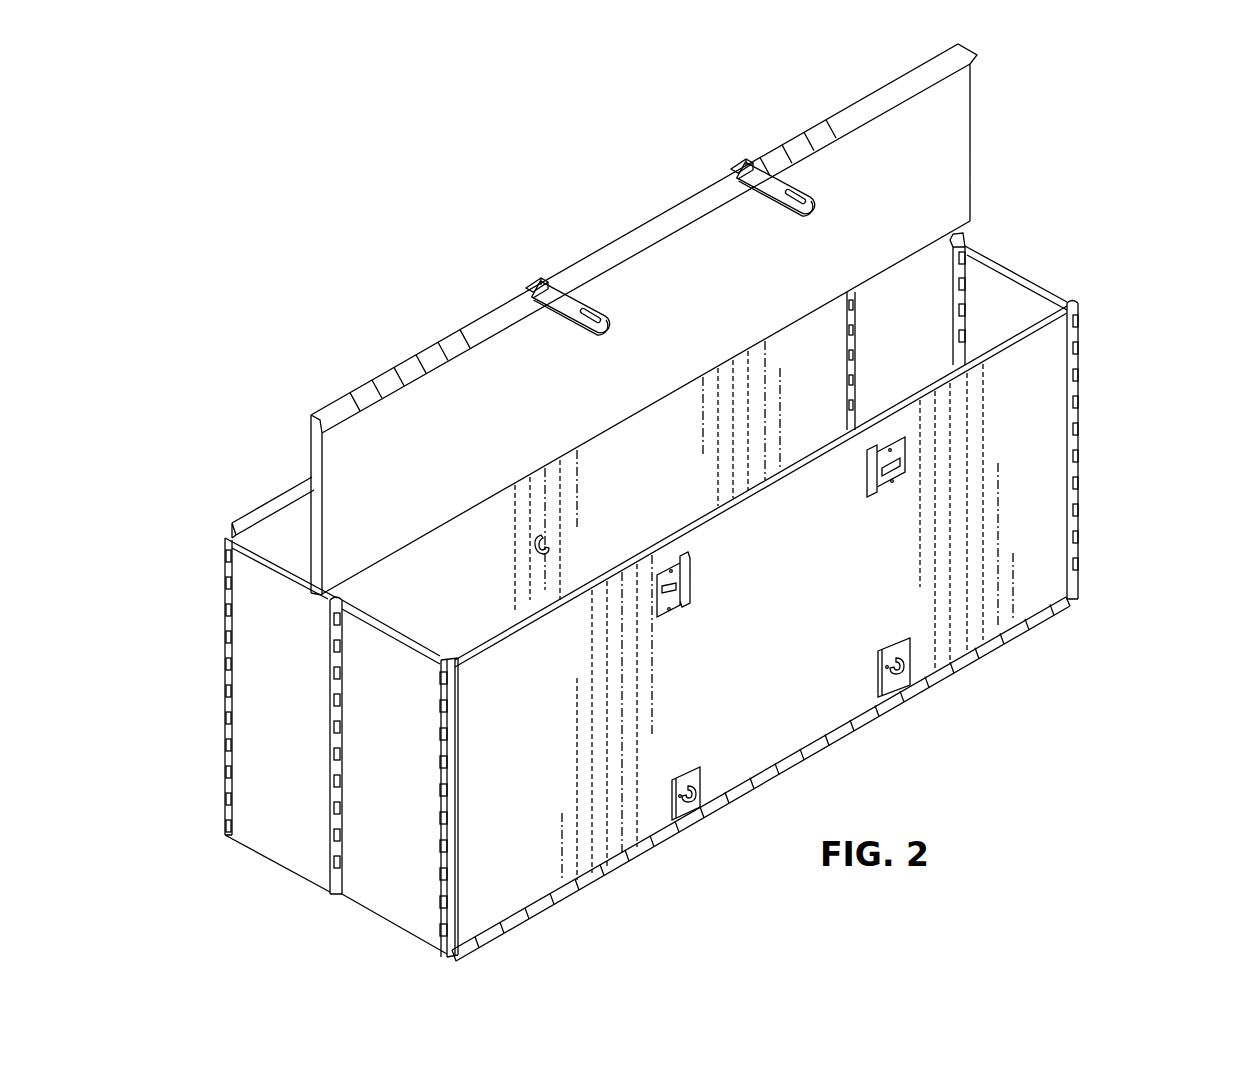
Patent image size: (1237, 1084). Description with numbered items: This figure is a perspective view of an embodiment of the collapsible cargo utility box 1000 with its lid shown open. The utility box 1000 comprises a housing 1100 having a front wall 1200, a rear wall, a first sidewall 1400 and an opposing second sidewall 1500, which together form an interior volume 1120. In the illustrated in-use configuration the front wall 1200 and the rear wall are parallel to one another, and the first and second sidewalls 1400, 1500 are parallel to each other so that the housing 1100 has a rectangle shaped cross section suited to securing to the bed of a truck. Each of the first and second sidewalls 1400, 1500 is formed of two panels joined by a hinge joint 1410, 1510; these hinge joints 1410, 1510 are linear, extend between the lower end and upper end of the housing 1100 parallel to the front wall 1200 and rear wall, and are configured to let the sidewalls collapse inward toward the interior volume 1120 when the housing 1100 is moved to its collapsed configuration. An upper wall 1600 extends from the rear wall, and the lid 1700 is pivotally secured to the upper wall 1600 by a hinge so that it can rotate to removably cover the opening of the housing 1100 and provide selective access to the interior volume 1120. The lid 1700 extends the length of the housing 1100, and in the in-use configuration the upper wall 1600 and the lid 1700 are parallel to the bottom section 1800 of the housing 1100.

The collapsible cargo utility box 1000 is at (1106, 168).
The housing 1100 is at (1083, 398).
The interior volume 1120 is at (665, 468).
The front wall 1200 is at (908, 662).
The first sidewall 1400 is at (248, 826).
The hinge joint 1410 is at (337, 895).
The second sidewall 1500 is at (1010, 293).
The hinge joint 1510 is at (962, 243).
The upper wall 1600 is at (283, 543).
The lid 1700 is at (405, 420).
The bottom section 1800 is at (515, 928).